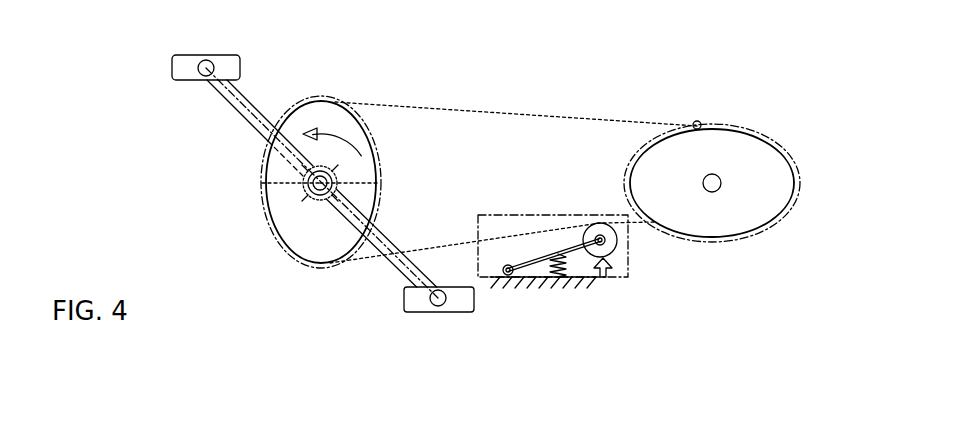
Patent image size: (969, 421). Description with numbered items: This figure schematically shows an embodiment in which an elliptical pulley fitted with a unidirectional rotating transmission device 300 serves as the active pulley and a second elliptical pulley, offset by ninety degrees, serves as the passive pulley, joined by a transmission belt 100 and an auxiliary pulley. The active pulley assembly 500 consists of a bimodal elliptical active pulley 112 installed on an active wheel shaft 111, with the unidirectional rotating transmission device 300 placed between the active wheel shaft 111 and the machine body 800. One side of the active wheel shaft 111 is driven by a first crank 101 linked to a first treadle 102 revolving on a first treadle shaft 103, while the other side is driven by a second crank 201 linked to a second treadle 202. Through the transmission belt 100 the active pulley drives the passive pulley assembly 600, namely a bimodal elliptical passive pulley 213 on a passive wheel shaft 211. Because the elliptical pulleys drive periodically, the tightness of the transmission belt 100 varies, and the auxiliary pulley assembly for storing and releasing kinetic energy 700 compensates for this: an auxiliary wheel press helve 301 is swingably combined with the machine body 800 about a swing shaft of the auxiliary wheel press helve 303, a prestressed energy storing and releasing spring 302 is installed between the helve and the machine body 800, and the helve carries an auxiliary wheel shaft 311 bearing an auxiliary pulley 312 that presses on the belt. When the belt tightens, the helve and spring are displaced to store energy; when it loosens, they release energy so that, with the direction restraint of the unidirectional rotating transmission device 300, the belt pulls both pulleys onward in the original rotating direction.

The transmission belt 100 is at (530, 115).
The first crank 101 is at (247, 98).
The first treadle 102 is at (170, 68).
The first treadle shaft 103 is at (212, 62).
The active wheel shaft 111 is at (268, 186).
The bimodal elliptical active pulley 112 is at (282, 240).
The second crank 201 is at (404, 266).
The second treadle 202 is at (462, 298).
The passive wheel shaft 211 is at (713, 174).
The bimodal elliptical passive pulley 213 is at (772, 220).
The unidirectional rotating transmission device 300 is at (378, 184).
The auxiliary wheel press helve 301 is at (538, 251).
The prestressed energy storing/releasing spring 302 is at (573, 265).
The swing shaft of auxiliary wheel press helve 303 is at (505, 265).
The auxiliary wheel shaft 311 is at (608, 224).
The auxiliary pulley 312 is at (627, 252).
The active pulley assembly 500 is at (318, 93).
The passive pulley assembly 600 is at (762, 132).
The auxiliary pulley assembly for storing/releasing kinetic energy 700 is at (492, 215).
The machine body 800 is at (308, 203).